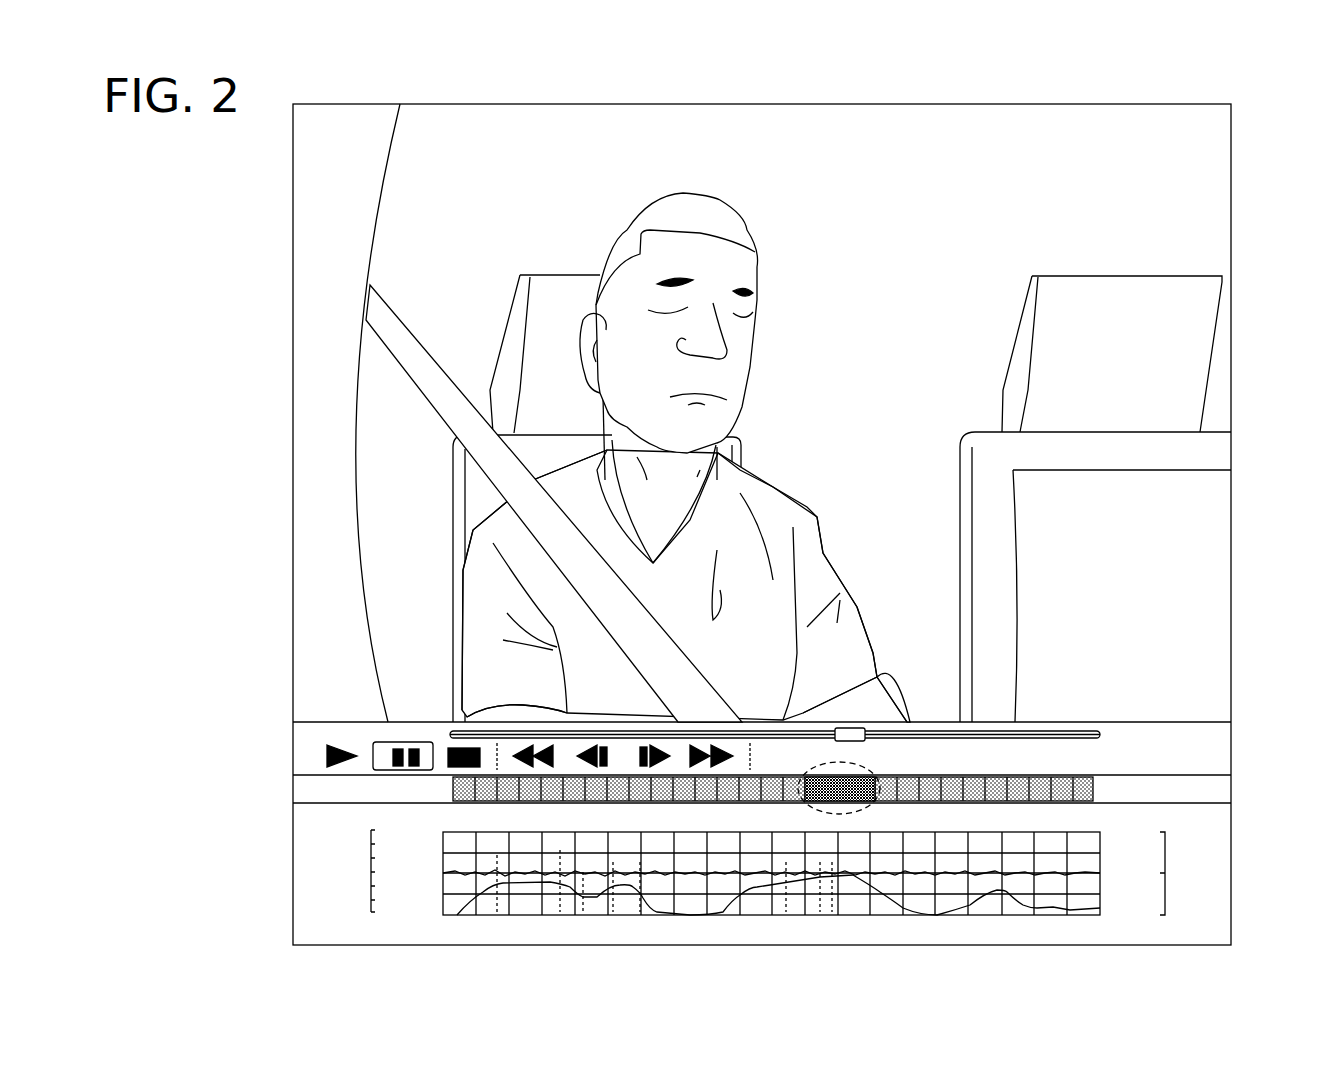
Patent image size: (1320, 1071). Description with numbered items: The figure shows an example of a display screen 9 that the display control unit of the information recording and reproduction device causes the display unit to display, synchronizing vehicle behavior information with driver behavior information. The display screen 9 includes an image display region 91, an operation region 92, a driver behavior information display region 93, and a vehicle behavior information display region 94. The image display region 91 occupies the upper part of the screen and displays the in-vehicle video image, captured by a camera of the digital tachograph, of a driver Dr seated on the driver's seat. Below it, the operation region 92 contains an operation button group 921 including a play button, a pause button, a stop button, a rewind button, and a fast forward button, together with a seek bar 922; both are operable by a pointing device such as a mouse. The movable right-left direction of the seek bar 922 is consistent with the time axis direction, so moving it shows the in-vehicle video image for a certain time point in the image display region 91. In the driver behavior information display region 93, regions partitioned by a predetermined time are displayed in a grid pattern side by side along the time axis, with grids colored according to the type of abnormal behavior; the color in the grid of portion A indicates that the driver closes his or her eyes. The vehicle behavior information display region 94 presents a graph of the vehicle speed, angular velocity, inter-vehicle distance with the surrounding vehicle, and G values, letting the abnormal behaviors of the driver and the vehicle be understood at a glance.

The display screen 9 is at (1106, 102).
The image display region 91 is at (1237, 104).
The operation region 92 is at (1237, 722).
The driver behavior information display region 93 is at (1237, 775).
The vehicle behavior information display region 94 is at (1237, 803).
The operation button group 921 is at (314, 749).
The seek bar 922 is at (866, 743).
The portion A is at (800, 812).
The driver Dr is at (727, 192).